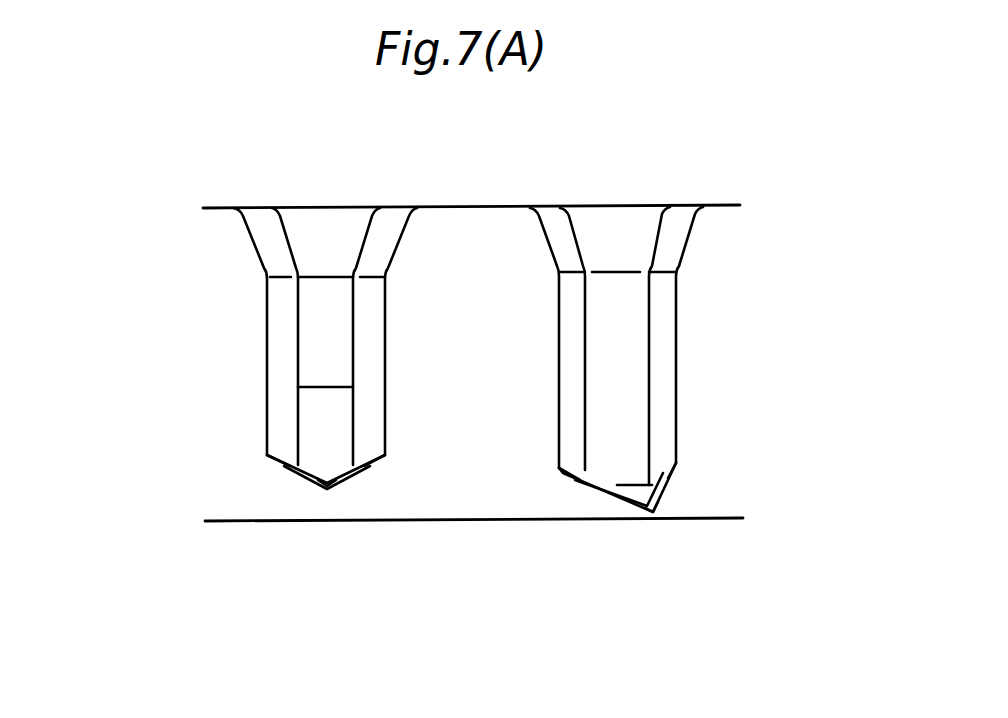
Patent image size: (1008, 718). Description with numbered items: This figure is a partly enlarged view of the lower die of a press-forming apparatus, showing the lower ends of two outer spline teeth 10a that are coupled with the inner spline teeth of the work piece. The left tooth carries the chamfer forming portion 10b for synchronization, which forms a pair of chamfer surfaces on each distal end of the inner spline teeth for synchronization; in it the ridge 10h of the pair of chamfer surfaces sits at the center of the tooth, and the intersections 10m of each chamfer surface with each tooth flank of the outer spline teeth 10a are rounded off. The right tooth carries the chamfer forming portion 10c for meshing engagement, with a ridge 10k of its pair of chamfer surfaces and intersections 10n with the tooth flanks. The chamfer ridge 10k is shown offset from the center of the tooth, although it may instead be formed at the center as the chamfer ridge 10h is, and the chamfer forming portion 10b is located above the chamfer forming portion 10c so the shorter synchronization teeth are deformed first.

The outer spline teeth 10a is at (320, 338).
The chamfer forming portion for synchronization 10b is at (324, 462).
The chamfer forming portion for meshing engagement 10c is at (628, 477).
The intersection 10m is at (288, 467).
The ridge 10h is at (329, 486).
The intersection 10n is at (570, 476).
The ridge 10k is at (653, 512).